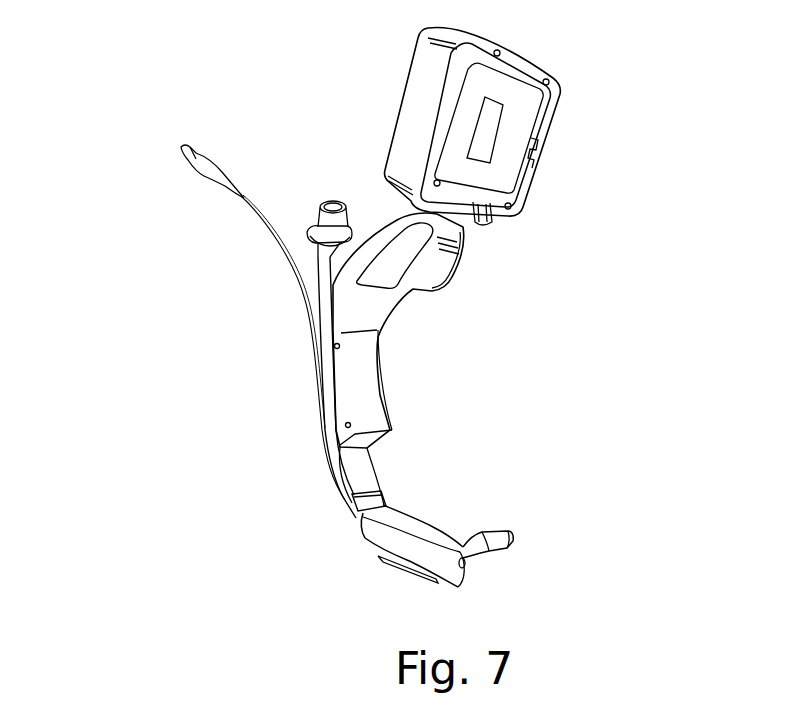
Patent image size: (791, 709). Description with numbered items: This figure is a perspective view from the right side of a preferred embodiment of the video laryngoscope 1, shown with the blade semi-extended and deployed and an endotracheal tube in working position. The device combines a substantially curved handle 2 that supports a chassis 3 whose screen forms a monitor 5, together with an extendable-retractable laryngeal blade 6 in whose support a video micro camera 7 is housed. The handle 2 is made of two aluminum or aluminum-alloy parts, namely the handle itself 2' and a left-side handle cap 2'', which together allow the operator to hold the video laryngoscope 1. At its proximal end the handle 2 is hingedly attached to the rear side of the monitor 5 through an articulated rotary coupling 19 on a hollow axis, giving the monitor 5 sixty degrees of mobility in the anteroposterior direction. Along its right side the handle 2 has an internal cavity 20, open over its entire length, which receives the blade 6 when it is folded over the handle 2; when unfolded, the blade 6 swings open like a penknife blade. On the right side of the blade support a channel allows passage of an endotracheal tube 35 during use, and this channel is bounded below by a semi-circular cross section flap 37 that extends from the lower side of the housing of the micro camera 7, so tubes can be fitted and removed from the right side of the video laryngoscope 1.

The video laryngoscope 1 is at (200, 90).
The handle 2 is at (465, 359).
The handle itself 2' is at (286, 387).
The left-side handle cap 2'' is at (426, 380).
The chassis 3 is at (523, 63).
The monitor 5 is at (390, 82).
The laryngeal blade 6 is at (520, 510).
The video micro camera 7 is at (467, 558).
The articulated rotary coupling 19 is at (473, 225).
The internal cavity 20 is at (397, 260).
The endotracheal tube 35 is at (350, 512).
The semi-circular cross section flap 37 is at (393, 568).